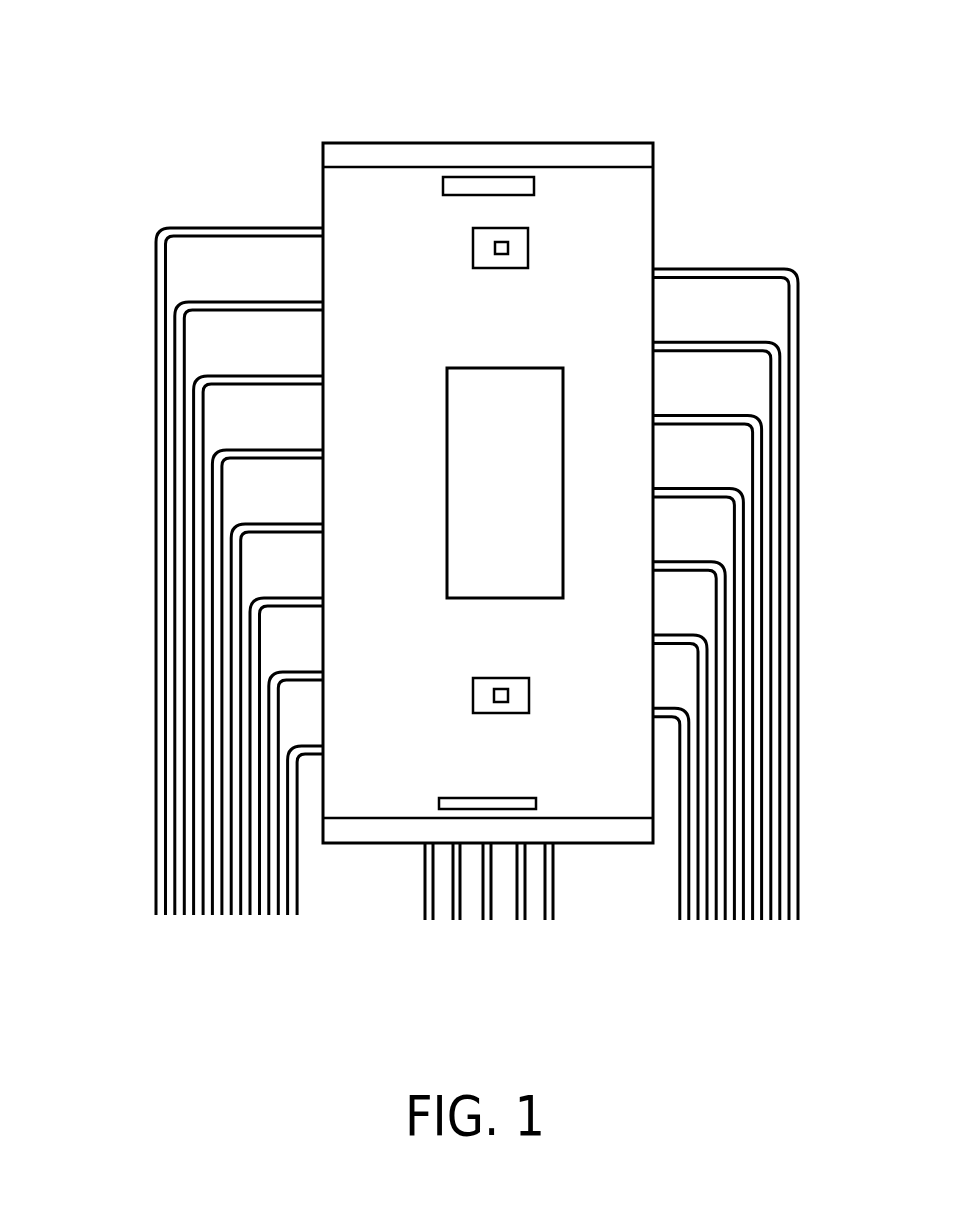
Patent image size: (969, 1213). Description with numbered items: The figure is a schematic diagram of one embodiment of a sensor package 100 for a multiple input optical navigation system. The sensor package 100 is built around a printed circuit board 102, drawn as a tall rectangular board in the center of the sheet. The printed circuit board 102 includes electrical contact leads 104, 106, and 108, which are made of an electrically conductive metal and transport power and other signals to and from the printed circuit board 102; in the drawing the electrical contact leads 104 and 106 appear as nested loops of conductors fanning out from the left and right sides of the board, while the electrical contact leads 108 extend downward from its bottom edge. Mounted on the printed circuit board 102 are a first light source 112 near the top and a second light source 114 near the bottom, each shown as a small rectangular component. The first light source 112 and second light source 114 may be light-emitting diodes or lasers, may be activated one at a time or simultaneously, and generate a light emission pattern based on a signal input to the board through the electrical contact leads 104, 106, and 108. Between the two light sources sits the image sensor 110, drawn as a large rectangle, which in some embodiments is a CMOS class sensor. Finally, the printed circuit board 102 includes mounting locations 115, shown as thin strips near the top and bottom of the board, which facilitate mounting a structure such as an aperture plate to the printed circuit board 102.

The sensor package 100 is at (172, 57).
The printed circuit board 102 is at (628, 142).
The electrical contact lead 104 is at (165, 199).
The electrical contact lead 106 is at (825, 250).
The electrical contact lead 108 is at (577, 918).
The image sensor 110 is at (458, 368).
The first light source 112 is at (528, 230).
The second light source 114 is at (529, 700).
The mounting locations 115 is at (443, 186).